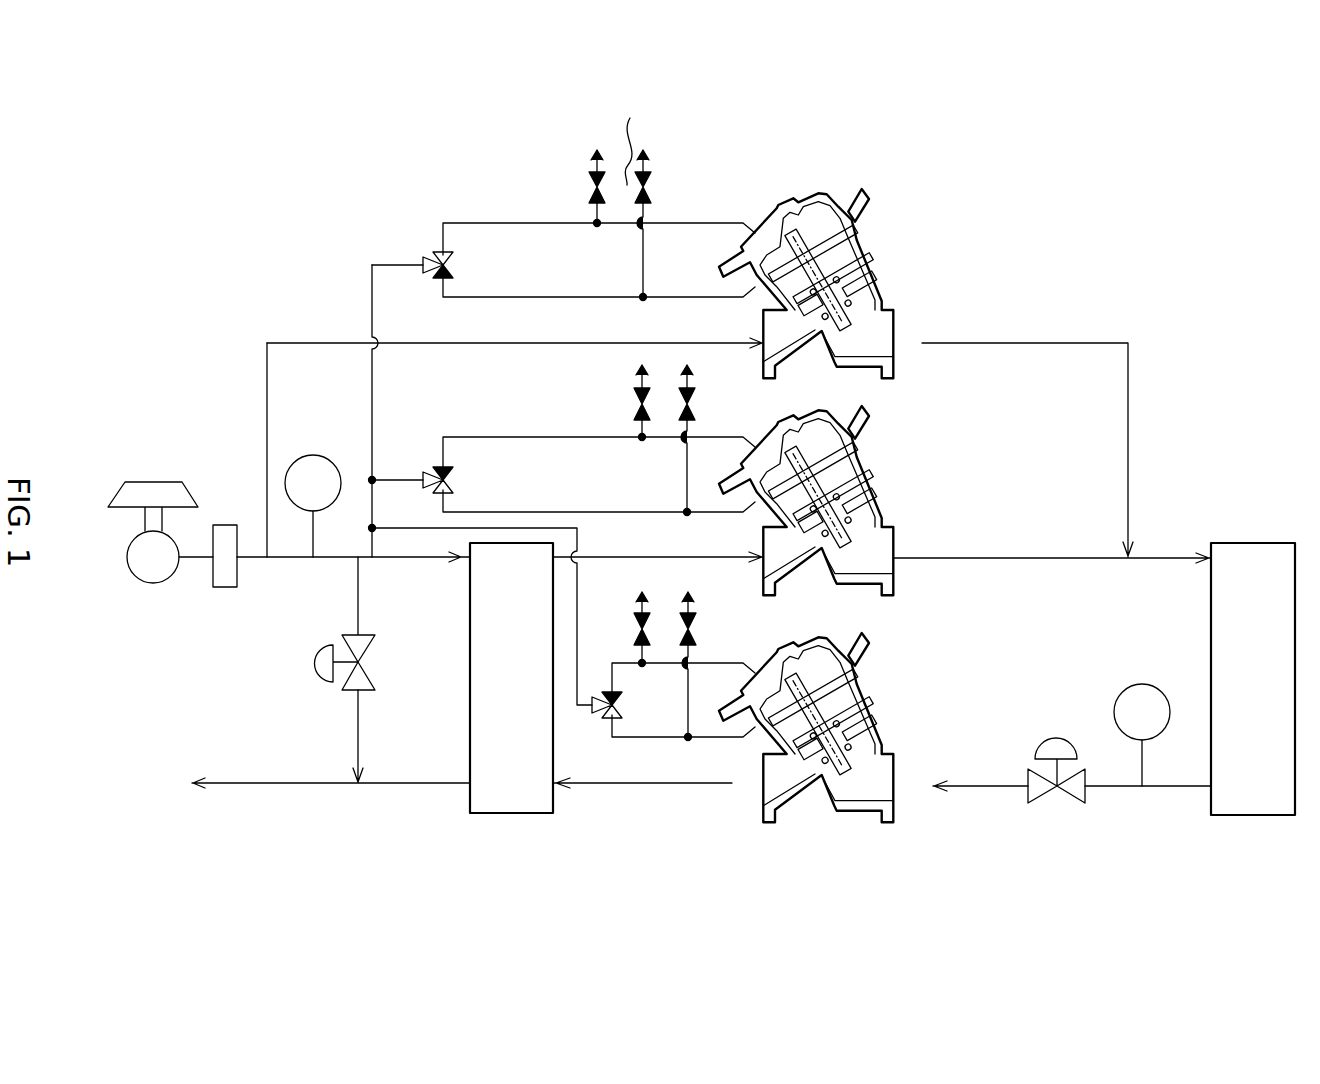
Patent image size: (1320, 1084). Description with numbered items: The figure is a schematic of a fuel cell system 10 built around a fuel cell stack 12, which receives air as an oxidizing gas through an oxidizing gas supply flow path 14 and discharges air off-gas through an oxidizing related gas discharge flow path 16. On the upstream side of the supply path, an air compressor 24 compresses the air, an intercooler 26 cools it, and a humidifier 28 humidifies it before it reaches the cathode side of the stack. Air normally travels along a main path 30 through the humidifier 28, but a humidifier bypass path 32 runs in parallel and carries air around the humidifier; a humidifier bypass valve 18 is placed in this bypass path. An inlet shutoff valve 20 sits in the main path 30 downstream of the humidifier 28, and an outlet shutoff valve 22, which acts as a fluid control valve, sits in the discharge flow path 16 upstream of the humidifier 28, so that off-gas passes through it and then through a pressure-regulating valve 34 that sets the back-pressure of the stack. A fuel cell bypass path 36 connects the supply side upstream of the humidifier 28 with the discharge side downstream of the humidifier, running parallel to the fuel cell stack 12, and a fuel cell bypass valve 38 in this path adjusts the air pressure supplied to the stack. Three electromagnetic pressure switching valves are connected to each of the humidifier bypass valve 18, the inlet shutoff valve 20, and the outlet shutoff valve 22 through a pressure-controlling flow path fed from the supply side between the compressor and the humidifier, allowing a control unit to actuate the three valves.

The fuel cell system 10 is at (1048, 217).
The fuel cell stack 12 is at (1252, 543).
The oxidizing gas supply flow path 14 is at (1091, 445).
The oxidizing related gas discharge flow path 16 is at (990, 786).
The humidifier bypass valve 18 is at (844, 258).
The inlet shutoff valve 20 is at (868, 507).
The outlet shutoff valve 22 is at (862, 756).
The air compressor 24 is at (138, 580).
The intercooler 26 is at (227, 588).
The humidifier 28 is at (510, 814).
The main path 30 is at (1055, 558).
The humidifier bypass path 32 is at (1128, 378).
The pressure-regulating valve 34 is at (1045, 795).
The fuel cell bypass path 36 is at (358, 725).
The fuel cell bypass valve 38 is at (378, 648).